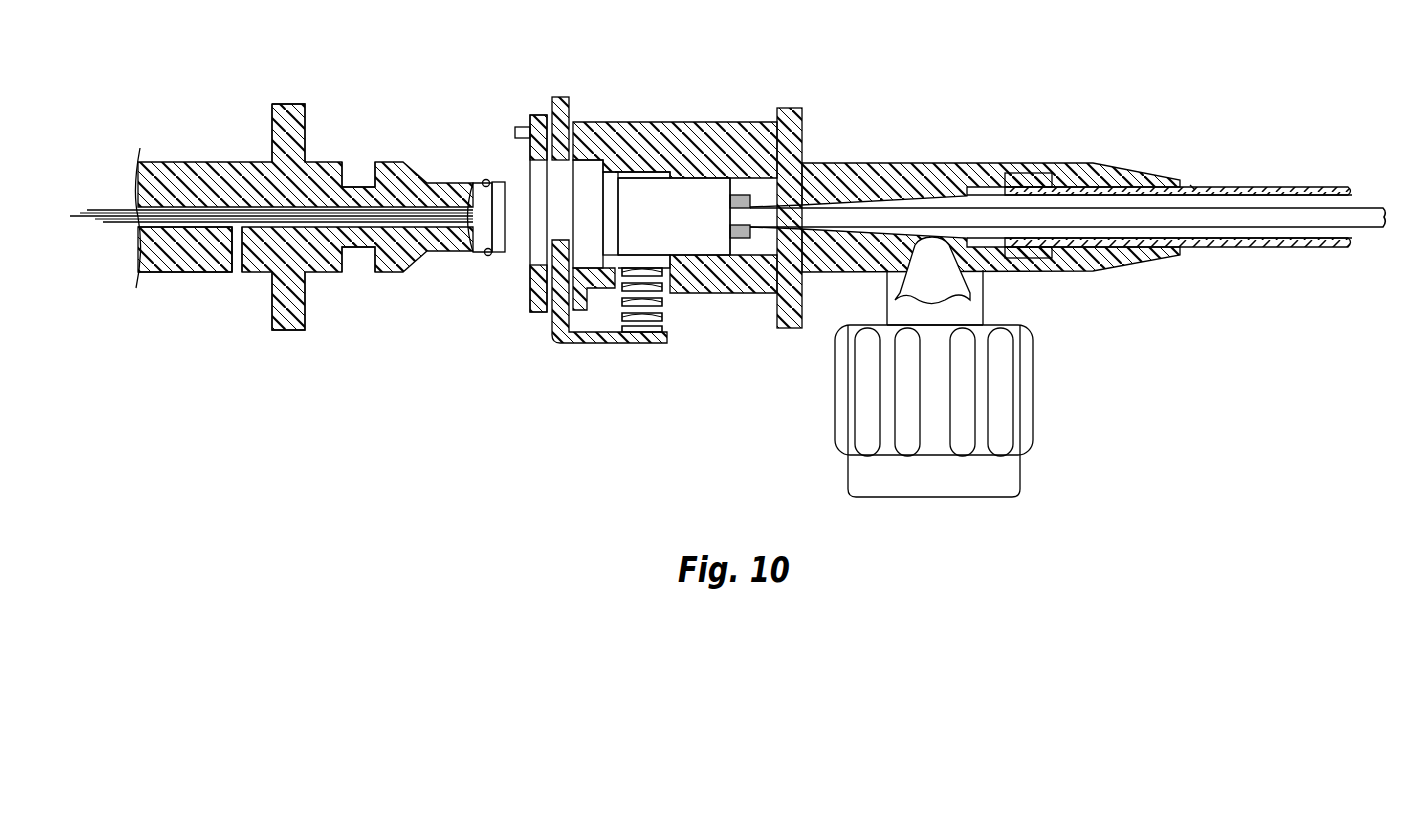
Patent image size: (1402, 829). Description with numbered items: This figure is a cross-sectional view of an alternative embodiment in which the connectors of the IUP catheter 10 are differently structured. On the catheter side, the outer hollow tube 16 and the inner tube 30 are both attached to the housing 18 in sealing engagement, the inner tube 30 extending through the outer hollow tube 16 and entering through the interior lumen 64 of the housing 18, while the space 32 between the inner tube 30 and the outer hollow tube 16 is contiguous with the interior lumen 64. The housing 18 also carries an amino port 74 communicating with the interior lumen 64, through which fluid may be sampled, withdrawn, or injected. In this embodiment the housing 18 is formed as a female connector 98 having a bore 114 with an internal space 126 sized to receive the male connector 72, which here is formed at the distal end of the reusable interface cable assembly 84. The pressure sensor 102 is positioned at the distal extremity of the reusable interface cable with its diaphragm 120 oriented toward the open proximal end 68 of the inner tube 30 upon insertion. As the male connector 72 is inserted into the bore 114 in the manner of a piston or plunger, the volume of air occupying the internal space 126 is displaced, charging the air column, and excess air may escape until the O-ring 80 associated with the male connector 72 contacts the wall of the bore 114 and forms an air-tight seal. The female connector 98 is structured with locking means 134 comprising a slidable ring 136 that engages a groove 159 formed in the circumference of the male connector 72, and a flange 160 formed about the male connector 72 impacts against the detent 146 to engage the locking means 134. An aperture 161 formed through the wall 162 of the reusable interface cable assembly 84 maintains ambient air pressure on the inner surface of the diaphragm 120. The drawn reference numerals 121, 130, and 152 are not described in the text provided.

The IUP catheter 10 is at (1228, 150).
The outer hollow tube 16 is at (1272, 186).
The housing 18 is at (1020, 172).
The inner tube 30 is at (1280, 230).
The space 32 is at (1205, 244).
The interior lumen 64 is at (935, 200).
The proximal end of the inner tube 68 is at (762, 205).
The male connector 72 is at (380, 160).
The amino port 74 is at (1035, 393).
The O-ring 80 is at (486, 178).
The reusable interface cable assembly 84 is at (140, 100).
The female connector 98 is at (722, 122).
The pressure sensor 102 is at (462, 183).
The bore 114 is at (704, 184).
The diaphragm 120 is at (500, 236).
The wire 121 is at (190, 225).
The internal space 126 is at (700, 240).
The plunger 130 is at (640, 170).
The locking means 134 is at (601, 372).
The slidable ring 136 is at (578, 342).
The detent 146 is at (524, 126).
The spring 152 is at (650, 330).
The groove 159 is at (358, 186).
The flange 160 is at (290, 102).
The aperture 161 is at (237, 264).
The wall 162 is at (176, 262).